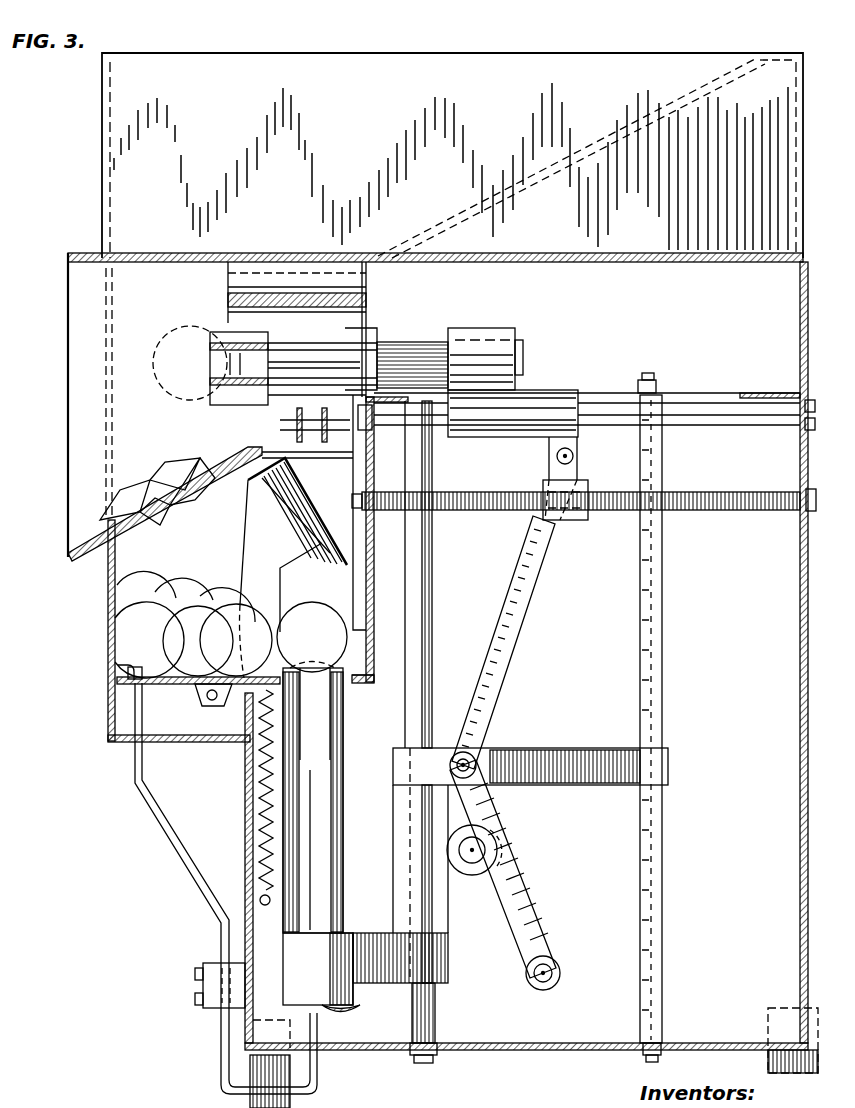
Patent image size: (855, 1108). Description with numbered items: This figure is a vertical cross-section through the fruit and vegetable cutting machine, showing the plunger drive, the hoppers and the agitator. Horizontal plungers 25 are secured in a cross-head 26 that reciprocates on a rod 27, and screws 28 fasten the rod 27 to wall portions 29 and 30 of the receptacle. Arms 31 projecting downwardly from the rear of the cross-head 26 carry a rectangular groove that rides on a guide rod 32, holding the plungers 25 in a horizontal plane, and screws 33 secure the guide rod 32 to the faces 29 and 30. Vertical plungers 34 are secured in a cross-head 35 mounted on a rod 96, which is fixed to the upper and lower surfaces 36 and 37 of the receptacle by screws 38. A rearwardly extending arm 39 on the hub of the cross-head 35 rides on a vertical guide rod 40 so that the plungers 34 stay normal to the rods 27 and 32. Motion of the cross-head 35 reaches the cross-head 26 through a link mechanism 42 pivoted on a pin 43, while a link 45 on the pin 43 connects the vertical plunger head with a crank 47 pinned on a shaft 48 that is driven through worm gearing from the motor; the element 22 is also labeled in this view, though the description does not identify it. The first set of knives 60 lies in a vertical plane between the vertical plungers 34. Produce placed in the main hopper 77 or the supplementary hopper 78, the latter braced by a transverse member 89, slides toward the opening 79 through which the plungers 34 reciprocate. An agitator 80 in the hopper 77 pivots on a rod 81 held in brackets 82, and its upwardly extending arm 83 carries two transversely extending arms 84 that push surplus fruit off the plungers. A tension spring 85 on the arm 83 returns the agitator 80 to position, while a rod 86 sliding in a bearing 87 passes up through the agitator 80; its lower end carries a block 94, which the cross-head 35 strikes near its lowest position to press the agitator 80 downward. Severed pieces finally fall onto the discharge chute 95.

The supplementary hopper 78 is at (686, 41).
The upper surface 36 is at (690, 254).
The wall portion 30 is at (800, 612).
The main hopper 77 is at (145, 555).
The discharge chute 95 is at (212, 462).
The horizontal plungers 25 is at (242, 340).
The first set of knives 60 is at (297, 430).
The wall portion 29 is at (376, 600).
The motor 22 is at (502, 332).
The cross-head 26 is at (570, 390).
The rod 27 is at (710, 415).
The screws 28 is at (372, 410).
The guide rod 32 is at (730, 510).
The screws 33 is at (375, 520).
The arms 31 is at (548, 470).
The link mechanism 42 is at (580, 458).
The vertical guide rod 40 is at (655, 718).
The rearwardly extending arm 39 is at (572, 750).
The rod 96 is at (412, 718).
The pin 43 is at (480, 778).
The link 45 is at (513, 895).
The crank 47 is at (500, 920).
The shaft 48 is at (478, 853).
The cross-head 35 is at (366, 940).
The vertical plungers 34 is at (300, 915).
The block 94 is at (332, 1012).
The screws 38 is at (435, 1057).
The lower surface 37 is at (562, 1052).
The tension spring 85 is at (258, 840).
The agitator 80 is at (122, 690).
The bearing 87 is at (118, 665).
The brackets 82 is at (206, 698).
The rod 81 is at (213, 706).
The rod 86 is at (178, 852).
The transverse member 89 is at (212, 1000).
The transversely extending arms 84 is at (300, 490).
The upwardly extending arm 83 is at (245, 538).
The opening 79 is at (348, 672).